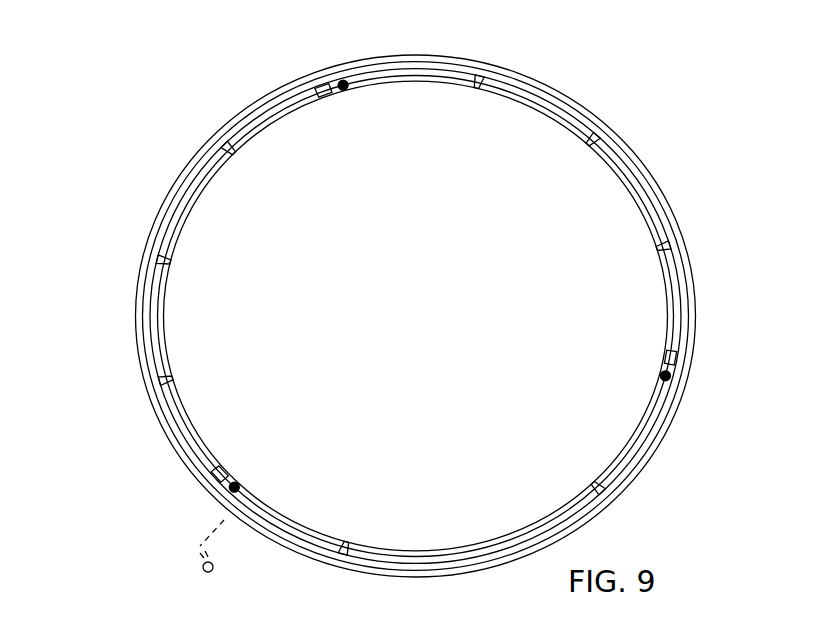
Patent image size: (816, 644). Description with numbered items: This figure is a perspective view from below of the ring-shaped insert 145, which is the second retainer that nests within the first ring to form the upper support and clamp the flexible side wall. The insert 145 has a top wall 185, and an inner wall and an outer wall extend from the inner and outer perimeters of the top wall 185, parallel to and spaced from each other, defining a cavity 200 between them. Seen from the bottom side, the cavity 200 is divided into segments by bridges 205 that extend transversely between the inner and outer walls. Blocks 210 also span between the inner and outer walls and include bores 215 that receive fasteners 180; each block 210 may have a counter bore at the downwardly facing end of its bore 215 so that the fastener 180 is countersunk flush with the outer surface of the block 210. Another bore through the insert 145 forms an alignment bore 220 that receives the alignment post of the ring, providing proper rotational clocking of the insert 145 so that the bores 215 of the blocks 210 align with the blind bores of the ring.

The insert 145 is at (196, 102).
The fastener 180 is at (206, 572).
The top wall 185 is at (167, 422).
The cavity 200 is at (150, 242).
The bridge 205 is at (224, 148).
The block 210 is at (327, 88).
The bore 215 is at (344, 90).
The alignment bore 220 is at (606, 155).